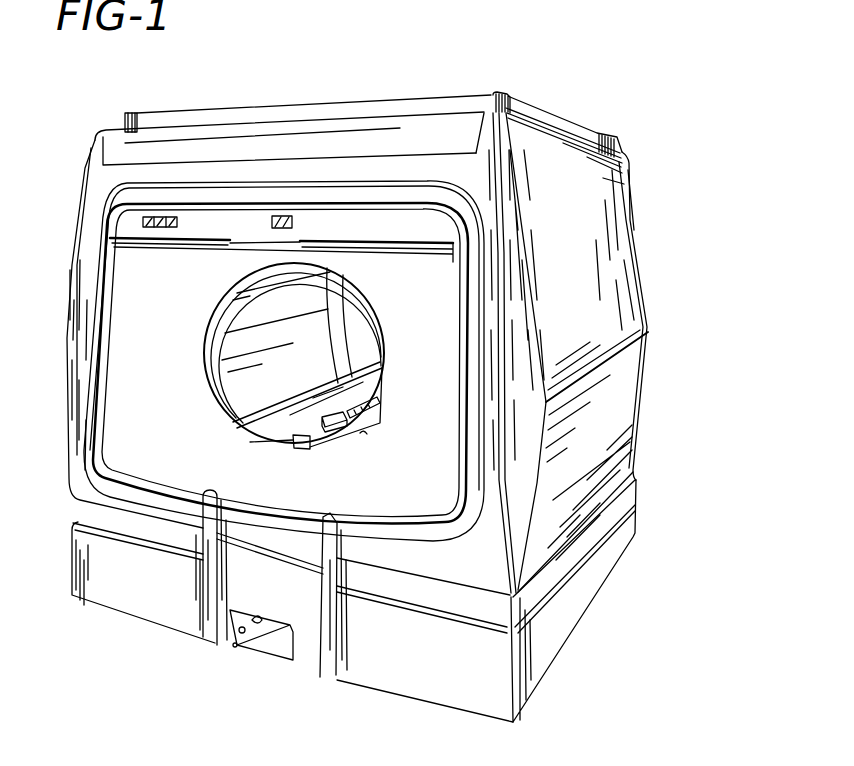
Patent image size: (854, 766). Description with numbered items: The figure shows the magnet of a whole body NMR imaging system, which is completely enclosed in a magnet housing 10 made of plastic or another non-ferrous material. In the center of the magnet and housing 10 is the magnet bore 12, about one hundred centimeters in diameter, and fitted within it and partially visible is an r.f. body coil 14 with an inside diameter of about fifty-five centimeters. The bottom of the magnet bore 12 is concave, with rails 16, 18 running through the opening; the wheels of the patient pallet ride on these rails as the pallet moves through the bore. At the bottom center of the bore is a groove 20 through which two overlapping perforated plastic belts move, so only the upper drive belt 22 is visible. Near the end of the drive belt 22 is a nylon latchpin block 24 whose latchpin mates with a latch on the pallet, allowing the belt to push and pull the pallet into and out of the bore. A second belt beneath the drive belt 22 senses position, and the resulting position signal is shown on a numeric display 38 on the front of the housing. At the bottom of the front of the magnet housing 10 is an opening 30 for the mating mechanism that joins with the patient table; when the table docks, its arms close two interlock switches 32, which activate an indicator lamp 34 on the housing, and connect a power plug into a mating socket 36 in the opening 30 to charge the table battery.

The magnet housing 10 is at (406, 125).
The magnet bore 12 is at (372, 290).
The r.f. body coil 14 is at (328, 318).
The rail 16 is at (286, 398).
The rail 18 is at (362, 435).
The groove 20 is at (296, 443).
The drive belt 22 is at (350, 416).
The latchpin block 24 is at (364, 432).
The opening 30 is at (280, 645).
The interlock switch 32 is at (235, 647).
The indicator lamp 34 is at (278, 217).
The socket 36 is at (252, 618).
The numeric display 38 is at (143, 219).